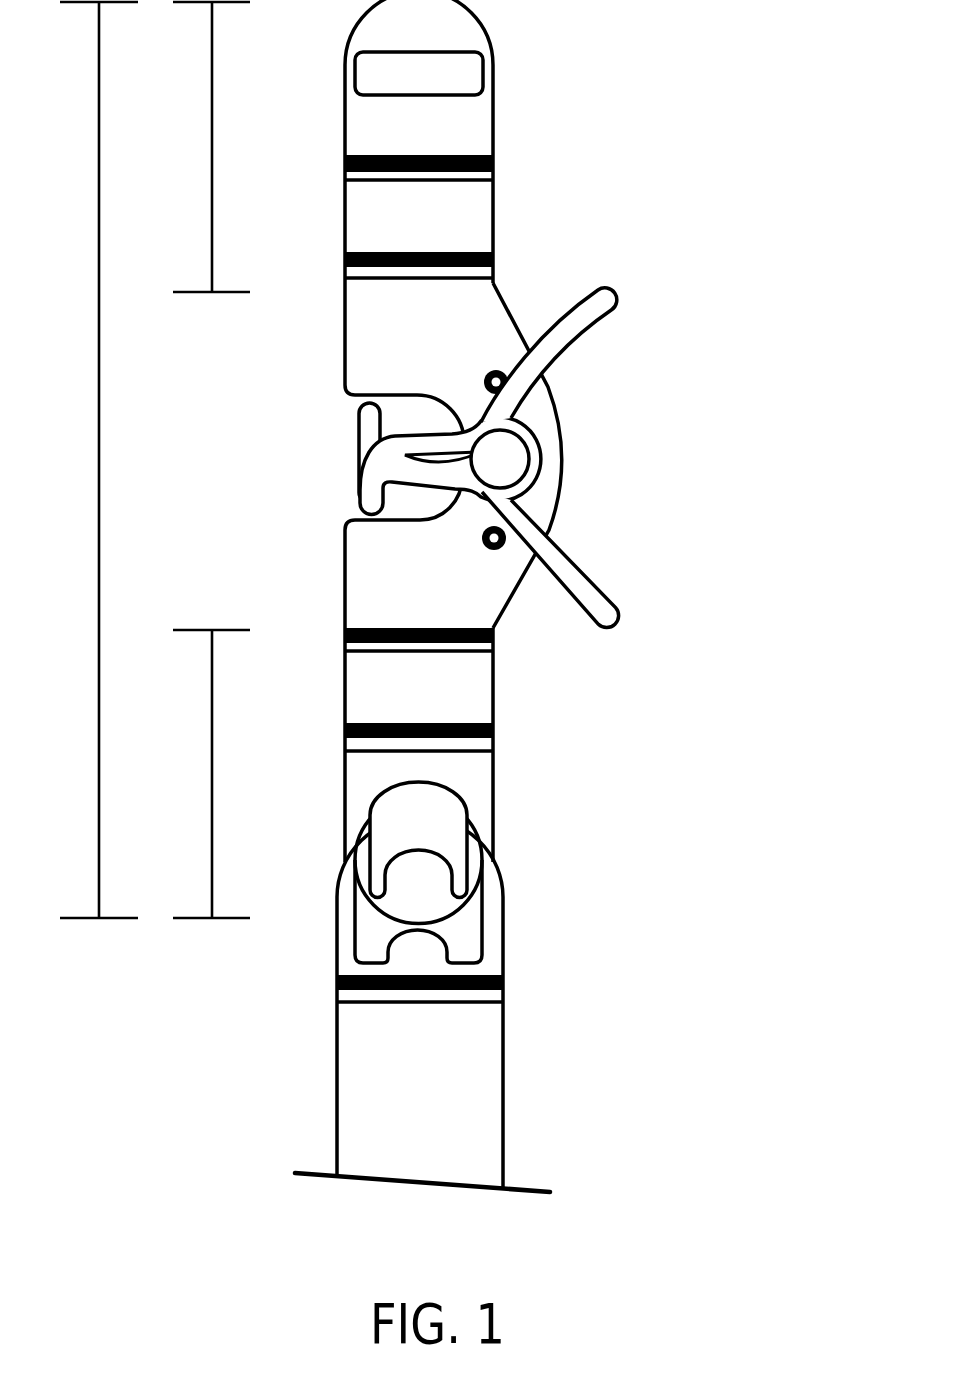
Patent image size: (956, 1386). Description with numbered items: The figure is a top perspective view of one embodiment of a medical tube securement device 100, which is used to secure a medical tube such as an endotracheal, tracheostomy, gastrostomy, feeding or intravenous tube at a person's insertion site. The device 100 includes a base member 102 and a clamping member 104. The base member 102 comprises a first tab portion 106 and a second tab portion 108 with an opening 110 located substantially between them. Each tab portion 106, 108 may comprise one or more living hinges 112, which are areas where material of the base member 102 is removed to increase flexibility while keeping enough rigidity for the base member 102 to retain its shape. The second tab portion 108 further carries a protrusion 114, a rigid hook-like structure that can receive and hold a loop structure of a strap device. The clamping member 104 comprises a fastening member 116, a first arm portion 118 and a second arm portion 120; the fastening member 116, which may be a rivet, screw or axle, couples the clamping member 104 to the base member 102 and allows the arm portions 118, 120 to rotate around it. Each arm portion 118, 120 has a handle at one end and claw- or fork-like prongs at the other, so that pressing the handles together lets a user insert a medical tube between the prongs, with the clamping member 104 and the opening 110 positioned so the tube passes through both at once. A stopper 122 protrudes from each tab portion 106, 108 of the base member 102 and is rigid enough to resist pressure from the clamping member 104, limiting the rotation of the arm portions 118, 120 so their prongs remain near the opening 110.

The medical tube securement device 100 is at (708, 74).
The base member 102 is at (85, 460).
The clamping member 104 is at (314, 461).
The first tab portion 106 is at (328, 192).
The second tab portion 108 is at (328, 724).
The opening 110 is at (411, 402).
The living hinges 112 is at (345, 733).
The protrusion 114 is at (357, 826).
The fastening member 116 is at (530, 455).
The first arm portion 118 is at (612, 593).
The second arm portion 120 is at (598, 289).
The stopper 122 is at (499, 368).